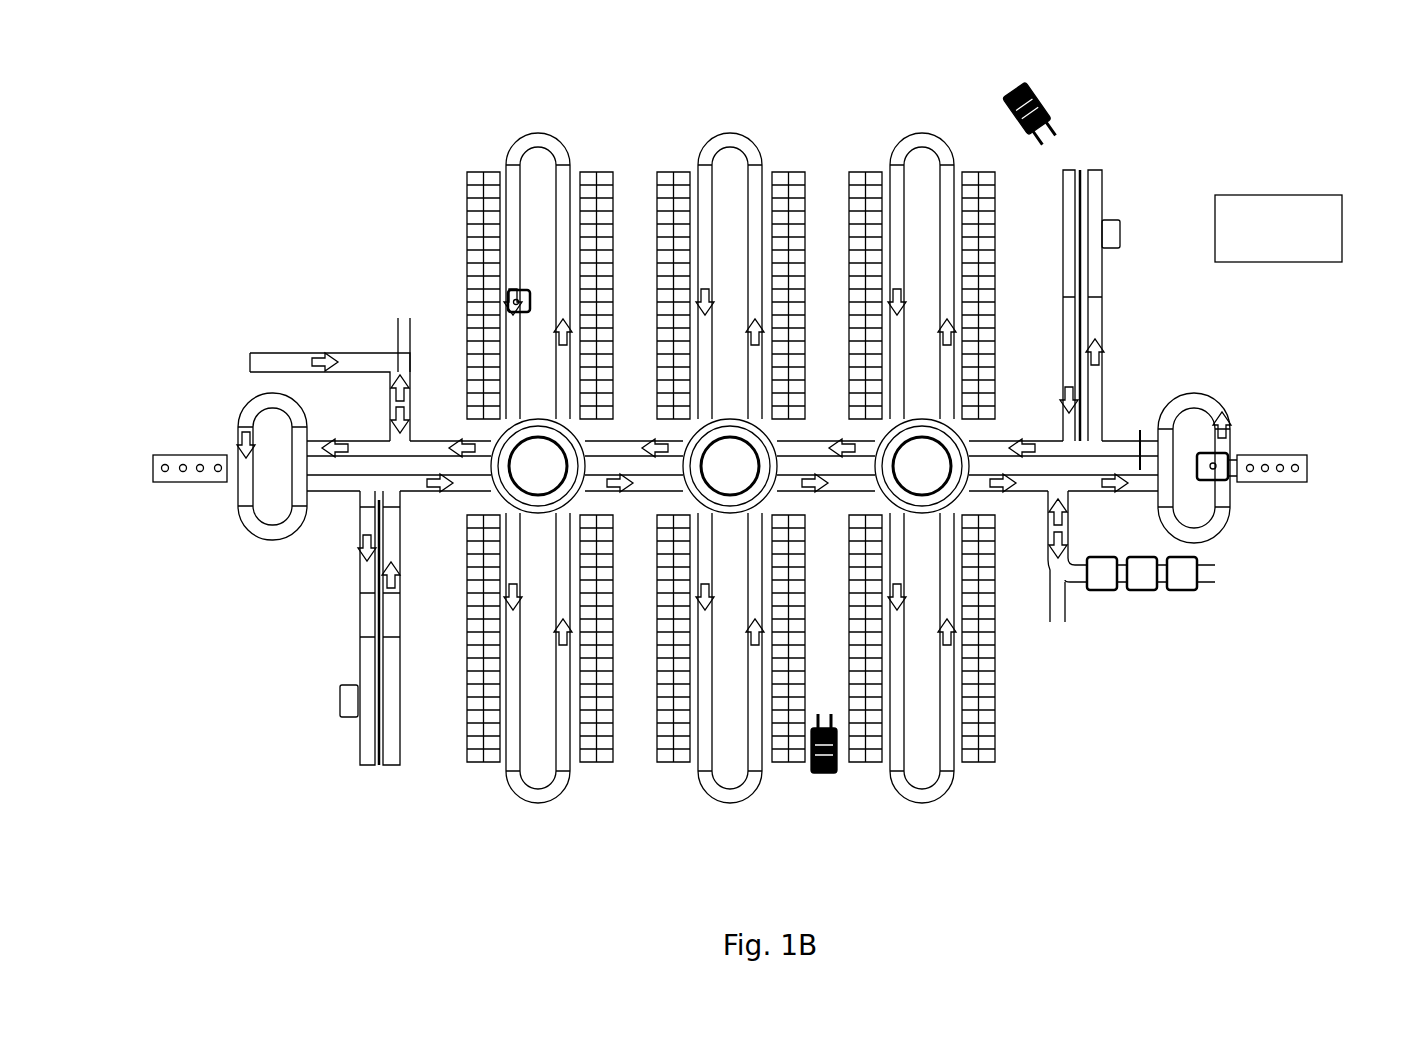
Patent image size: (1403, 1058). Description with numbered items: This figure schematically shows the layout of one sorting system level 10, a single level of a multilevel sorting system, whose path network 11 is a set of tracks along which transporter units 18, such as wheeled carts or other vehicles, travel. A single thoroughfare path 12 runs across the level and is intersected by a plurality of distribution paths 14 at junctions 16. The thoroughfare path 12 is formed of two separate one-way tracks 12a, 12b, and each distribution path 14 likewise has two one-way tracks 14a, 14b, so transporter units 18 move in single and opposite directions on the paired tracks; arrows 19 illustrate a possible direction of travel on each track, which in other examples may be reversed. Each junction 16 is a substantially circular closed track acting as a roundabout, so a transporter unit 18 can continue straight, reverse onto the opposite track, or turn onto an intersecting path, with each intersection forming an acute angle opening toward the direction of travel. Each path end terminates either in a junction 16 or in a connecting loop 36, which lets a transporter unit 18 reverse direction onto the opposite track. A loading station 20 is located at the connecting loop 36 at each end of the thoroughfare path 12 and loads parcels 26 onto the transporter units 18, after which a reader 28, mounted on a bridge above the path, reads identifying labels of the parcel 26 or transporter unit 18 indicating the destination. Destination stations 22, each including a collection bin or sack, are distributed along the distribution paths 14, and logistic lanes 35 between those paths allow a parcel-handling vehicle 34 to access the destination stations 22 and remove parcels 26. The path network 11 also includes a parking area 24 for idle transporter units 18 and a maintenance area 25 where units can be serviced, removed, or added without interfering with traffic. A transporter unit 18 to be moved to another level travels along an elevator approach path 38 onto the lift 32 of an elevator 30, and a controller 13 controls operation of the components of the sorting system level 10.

The sorting system level 10 is at (297, 133).
The path network 11 is at (322, 249).
The thoroughfare path 12 is at (447, 532).
The one-way track 12a is at (996, 438).
The one-way track 12b is at (990, 492).
The controller 13 is at (1305, 196).
The distribution path 14 is at (706, 130).
The one-way track 14a is at (760, 175).
The one-way track 14b is at (712, 172).
The junction 16 is at (500, 440).
The transporter unit 18 is at (1145, 588).
The arrows 19 is at (705, 303).
The loading station 20 is at (185, 482).
The destination station 22 is at (465, 300).
The parking area 24 is at (250, 356).
The maintenance area 25 is at (398, 322).
The parcel 26 is at (200, 460).
The reader 28 is at (323, 520).
The elevator 30 is at (340, 702).
The lift 32 is at (365, 760).
The parcel-handling vehicle 34 is at (823, 776).
The logistic lane 35 is at (823, 188).
The connecting loop 36 is at (240, 393).
The elevator approach path 38 is at (357, 612).